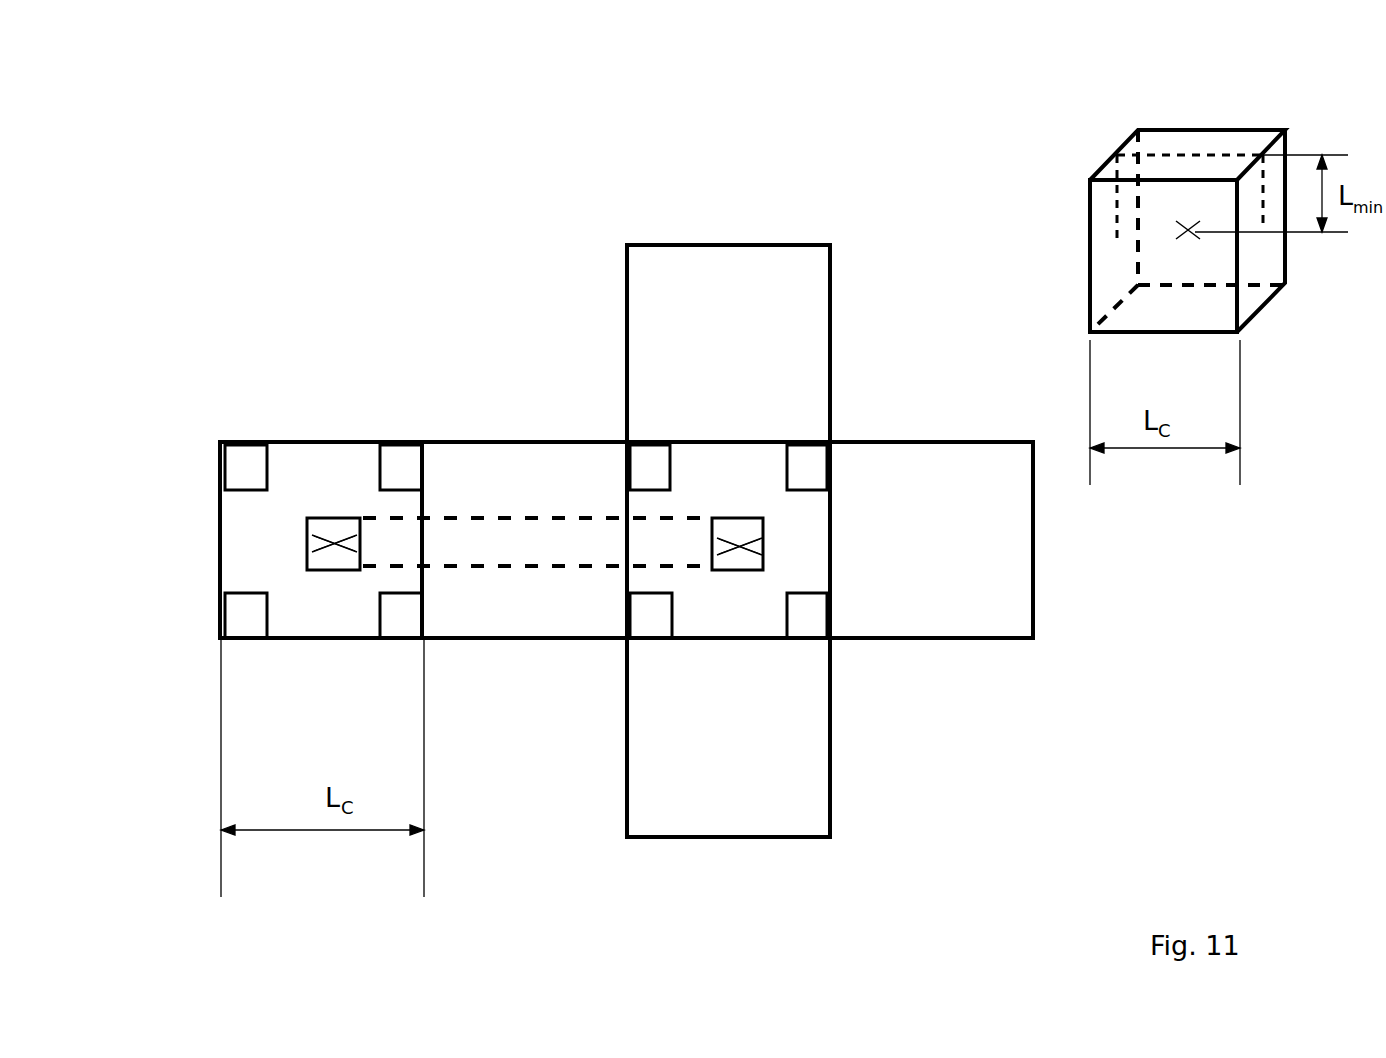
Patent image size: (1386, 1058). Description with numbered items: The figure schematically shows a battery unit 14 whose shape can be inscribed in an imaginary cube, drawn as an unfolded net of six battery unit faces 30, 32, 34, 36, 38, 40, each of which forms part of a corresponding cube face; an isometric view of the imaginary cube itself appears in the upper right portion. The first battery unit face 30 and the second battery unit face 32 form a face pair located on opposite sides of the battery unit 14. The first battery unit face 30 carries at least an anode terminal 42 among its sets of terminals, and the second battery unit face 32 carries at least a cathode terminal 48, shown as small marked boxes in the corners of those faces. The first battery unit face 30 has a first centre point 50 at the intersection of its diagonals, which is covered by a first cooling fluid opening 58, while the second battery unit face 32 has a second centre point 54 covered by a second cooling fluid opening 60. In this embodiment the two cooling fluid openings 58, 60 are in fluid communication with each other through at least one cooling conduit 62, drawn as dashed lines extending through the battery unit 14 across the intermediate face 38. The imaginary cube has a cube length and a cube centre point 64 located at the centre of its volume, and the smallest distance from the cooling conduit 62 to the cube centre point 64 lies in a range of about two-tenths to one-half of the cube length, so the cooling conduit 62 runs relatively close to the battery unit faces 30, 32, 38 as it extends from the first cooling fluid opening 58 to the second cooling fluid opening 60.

The battery unit 14 is at (409, 350).
The cathode terminal 48 is at (179, 464).
The anode terminal 42 is at (868, 363).
The second battery unit face 32 is at (279, 562).
The battery unit face 38 is at (494, 502).
The first battery unit face 30 is at (714, 612).
The battery unit face 40 is at (887, 569).
The battery unit face 34 is at (717, 400).
The battery unit face 36 is at (716, 722).
The second cooling fluid opening 60 is at (330, 511).
The first cooling fluid opening 58 is at (722, 511).
The second centre point 54 is at (338, 586).
The first centre point 50 is at (759, 549).
The cooling conduit 62 is at (516, 590).
The cube centre point 64 is at (1166, 246).